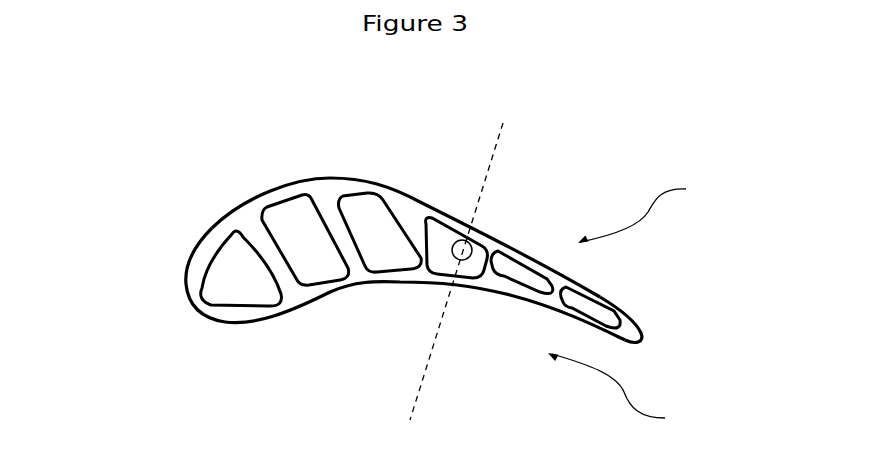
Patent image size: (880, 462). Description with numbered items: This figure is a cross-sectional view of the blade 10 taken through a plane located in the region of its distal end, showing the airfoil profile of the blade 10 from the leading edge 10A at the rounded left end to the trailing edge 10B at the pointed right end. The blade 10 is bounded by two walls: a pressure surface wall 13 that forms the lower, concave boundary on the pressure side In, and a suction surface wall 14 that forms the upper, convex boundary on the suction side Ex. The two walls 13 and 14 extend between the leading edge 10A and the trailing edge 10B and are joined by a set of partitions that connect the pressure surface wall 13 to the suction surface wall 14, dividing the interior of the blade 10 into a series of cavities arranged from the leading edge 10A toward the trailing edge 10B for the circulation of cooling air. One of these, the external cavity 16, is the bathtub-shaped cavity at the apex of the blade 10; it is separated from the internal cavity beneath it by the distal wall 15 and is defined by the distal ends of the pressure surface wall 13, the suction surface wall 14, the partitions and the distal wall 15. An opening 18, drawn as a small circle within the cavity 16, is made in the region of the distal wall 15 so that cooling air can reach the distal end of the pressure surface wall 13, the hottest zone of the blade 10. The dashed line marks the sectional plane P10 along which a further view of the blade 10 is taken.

The blade 10 is at (205, 237).
The leading edge 10A is at (188, 291).
The trailing edge 10B is at (645, 340).
The pressure surface wall 13 is at (322, 292).
The suction surface wall 14 is at (272, 198).
The distal wall 15 is at (421, 228).
The external cavity 16 is at (442, 240).
The opening 18 is at (466, 249).
The sectional plane P10 is at (497, 153).
The suction side Ex is at (643, 213).
The pressure side In is at (615, 392).